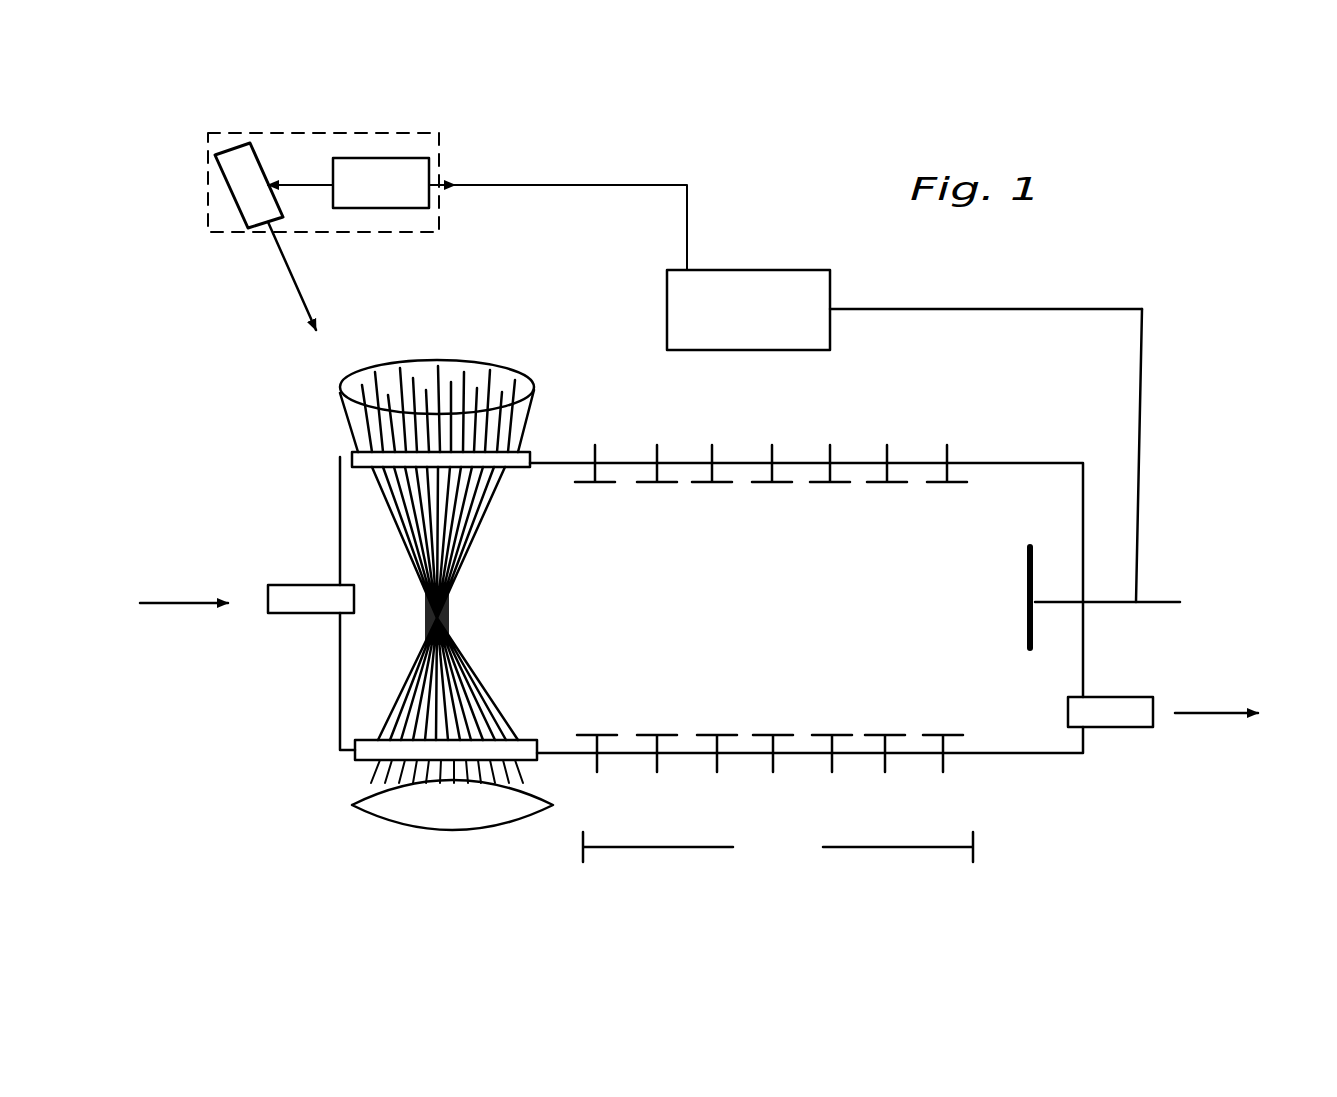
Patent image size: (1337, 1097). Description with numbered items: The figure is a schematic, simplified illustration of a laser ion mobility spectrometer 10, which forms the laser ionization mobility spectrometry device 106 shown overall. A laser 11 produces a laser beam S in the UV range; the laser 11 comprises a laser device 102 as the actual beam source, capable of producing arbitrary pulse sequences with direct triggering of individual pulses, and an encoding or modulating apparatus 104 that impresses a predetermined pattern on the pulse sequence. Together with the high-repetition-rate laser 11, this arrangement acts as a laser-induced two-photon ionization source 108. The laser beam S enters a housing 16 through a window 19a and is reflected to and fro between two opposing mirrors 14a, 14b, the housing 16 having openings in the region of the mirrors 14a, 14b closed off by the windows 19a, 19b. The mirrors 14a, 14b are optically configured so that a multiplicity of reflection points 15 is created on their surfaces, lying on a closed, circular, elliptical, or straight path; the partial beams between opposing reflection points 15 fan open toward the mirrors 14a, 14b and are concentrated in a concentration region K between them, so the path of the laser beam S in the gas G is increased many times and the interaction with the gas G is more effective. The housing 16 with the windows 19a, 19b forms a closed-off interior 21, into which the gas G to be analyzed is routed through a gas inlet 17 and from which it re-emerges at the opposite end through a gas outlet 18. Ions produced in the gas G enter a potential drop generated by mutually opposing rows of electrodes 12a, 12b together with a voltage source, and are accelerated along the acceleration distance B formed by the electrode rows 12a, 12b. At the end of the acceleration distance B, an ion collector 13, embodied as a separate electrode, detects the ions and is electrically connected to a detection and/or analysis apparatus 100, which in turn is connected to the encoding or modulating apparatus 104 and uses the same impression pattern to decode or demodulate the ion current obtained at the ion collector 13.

The spectrometer 10 is at (1253, 366).
The laser 11 is at (441, 154).
The row of electrodes 12a is at (645, 485).
The row of electrodes 12b is at (654, 734).
The ion collector 13 is at (1040, 571).
The mirror 14a is at (497, 369).
The mirror 14b is at (458, 826).
The reflection points 15 is at (410, 350).
The housing 16 is at (1035, 758).
The gas inlet 17 is at (326, 630).
The gas outlet 18 is at (1163, 757).
The window 19a is at (530, 455).
The window 19b is at (370, 752).
The interior 21 is at (776, 627).
The detection and/or analysis apparatus 100 is at (762, 285).
The laser device 102 is at (264, 185).
The encoding or modulating apparatus 104 is at (382, 198).
The laser ionization mobility spectrometry device 106 is at (1218, 266).
The laser-induced two-photon ionization source 108 is at (192, 376).
The acceleration distance B is at (778, 848).
The gas G is at (701, 636).
The concentration region K is at (470, 596).
The laser beam S is at (300, 276).